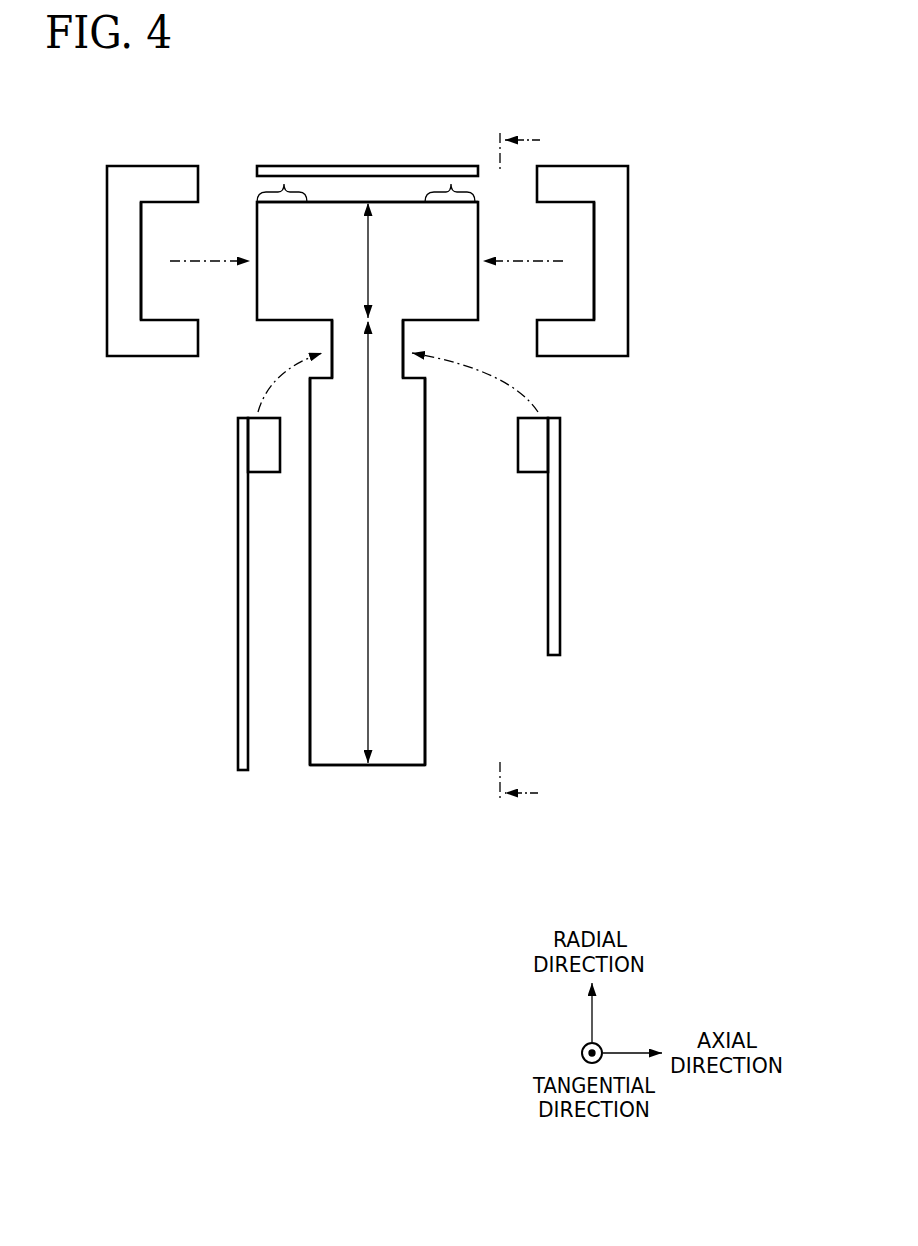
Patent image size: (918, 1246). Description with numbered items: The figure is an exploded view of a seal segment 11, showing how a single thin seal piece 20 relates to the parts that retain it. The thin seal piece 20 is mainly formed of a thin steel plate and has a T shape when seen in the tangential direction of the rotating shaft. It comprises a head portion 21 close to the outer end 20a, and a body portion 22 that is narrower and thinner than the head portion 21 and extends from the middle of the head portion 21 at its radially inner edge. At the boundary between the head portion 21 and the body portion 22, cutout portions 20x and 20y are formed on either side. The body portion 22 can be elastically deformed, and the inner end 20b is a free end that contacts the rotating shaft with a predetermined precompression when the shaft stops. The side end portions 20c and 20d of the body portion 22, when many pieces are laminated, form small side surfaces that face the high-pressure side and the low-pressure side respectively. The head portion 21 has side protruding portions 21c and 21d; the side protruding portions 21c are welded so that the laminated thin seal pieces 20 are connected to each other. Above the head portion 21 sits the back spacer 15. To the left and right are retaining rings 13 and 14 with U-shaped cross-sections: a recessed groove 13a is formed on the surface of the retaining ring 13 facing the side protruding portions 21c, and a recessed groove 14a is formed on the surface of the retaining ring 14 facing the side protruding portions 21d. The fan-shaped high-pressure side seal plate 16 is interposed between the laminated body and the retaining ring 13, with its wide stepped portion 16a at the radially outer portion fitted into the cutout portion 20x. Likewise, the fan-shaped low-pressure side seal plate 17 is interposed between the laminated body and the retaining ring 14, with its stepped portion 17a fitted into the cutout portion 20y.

The seal segment 11 is at (617, 130).
The retaining ring 13 is at (117, 190).
The recessed groove 13a is at (143, 238).
The retaining ring 14 is at (615, 190).
The recessed groove 14a is at (594, 238).
The back spacer 15 is at (341, 165).
The high-pressure side seal plate 16 is at (236, 530).
The stepped portion 16a is at (262, 447).
The low-pressure side seal plate 17 is at (562, 532).
The stepped portion 17a is at (537, 447).
The thin seal piece 20 is at (418, 768).
The outer end 20a is at (397, 201).
The inner end 20b is at (350, 766).
The side end portion 20c is at (308, 727).
The side end portion 20d is at (426, 708).
The cutout portion 20x is at (327, 330).
The cutout portion 20y is at (406, 330).
The head portion 21 is at (369, 262).
The side protruding portion 21c is at (284, 183).
The side protruding portion 21d is at (451, 183).
The body portion 22 is at (369, 545).